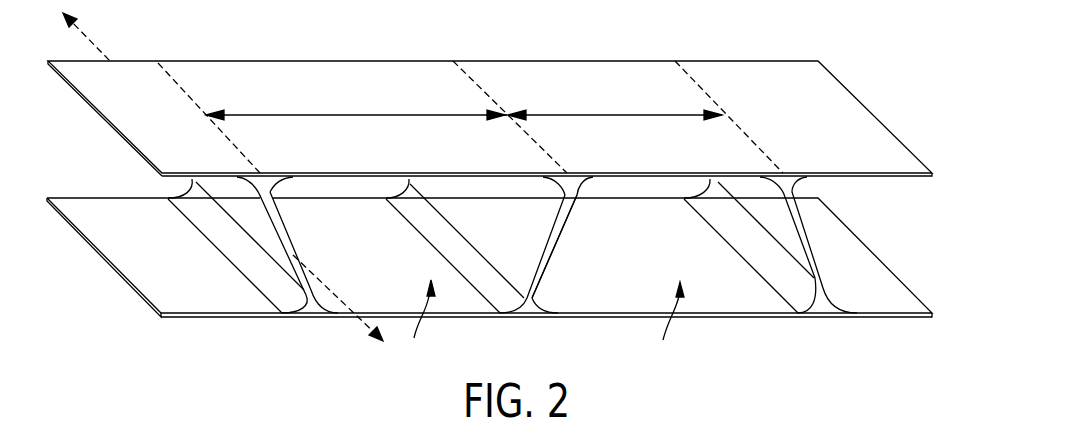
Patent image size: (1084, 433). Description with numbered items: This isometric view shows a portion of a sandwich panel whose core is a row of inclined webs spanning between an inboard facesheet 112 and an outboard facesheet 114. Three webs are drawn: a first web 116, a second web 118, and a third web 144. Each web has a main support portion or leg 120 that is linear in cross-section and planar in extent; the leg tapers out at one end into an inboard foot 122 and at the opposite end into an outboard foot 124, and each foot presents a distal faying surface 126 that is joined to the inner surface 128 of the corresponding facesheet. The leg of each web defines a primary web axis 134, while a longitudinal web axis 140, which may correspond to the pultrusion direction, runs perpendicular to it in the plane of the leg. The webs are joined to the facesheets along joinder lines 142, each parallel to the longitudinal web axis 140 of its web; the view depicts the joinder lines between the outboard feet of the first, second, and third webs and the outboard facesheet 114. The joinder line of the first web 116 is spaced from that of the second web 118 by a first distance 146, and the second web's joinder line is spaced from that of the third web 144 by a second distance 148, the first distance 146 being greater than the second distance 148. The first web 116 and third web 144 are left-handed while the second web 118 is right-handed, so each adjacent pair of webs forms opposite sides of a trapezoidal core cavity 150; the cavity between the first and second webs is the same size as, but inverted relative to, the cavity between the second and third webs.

The inboard facesheet 112 is at (890, 296).
The outboard facesheet 114 is at (827, 78).
The first web 116 is at (264, 217).
The second web 118 is at (506, 248).
The leg 120 is at (540, 271).
The inboard foot 122 is at (523, 318).
The outboard foot 124 is at (567, 193).
The faying surface 126 is at (280, 172).
The inner surface 128 is at (165, 252).
The primary web axis 134 is at (291, 318).
The longitudinal web axis 140 is at (357, 333).
The joinder line 142 is at (164, 64).
The third web 144 is at (808, 234).
The first distance 146 is at (361, 113).
The second distance 148 is at (608, 113).
The core cavity 150 is at (543, 329).